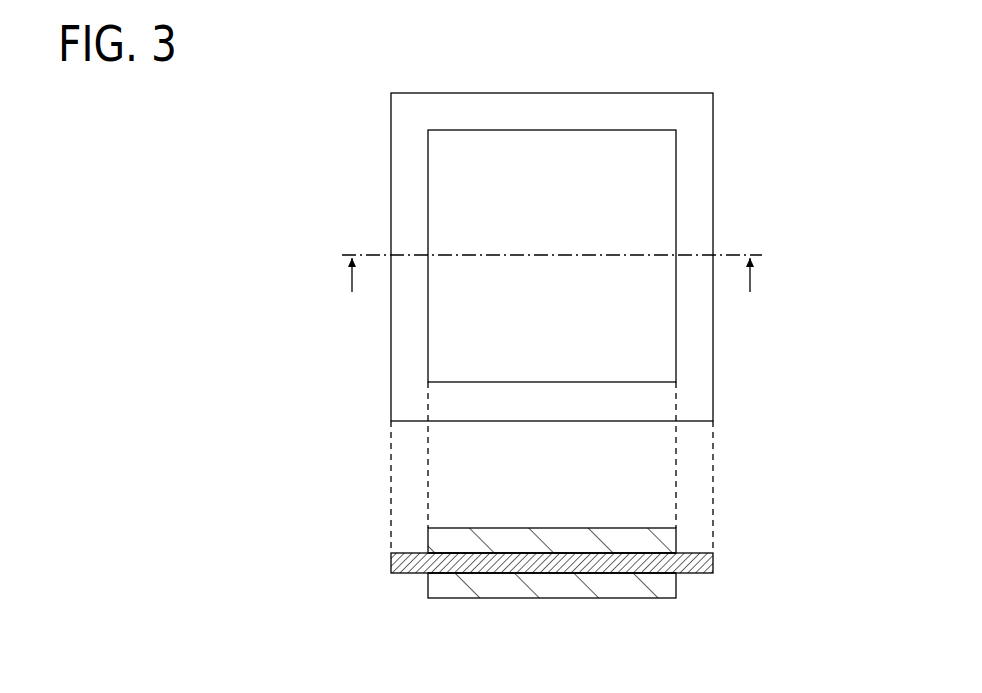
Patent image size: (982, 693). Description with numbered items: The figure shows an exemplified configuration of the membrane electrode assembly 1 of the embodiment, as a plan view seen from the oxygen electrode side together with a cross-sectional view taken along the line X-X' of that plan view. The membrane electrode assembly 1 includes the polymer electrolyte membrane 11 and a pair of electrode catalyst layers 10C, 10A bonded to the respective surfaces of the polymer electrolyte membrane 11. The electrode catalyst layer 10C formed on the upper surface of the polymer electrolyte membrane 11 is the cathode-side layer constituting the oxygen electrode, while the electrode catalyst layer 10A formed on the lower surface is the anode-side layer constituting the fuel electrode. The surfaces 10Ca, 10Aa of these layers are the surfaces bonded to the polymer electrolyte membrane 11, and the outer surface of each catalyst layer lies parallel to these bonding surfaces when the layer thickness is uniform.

The membrane electrode assembly 1 is at (745, 128).
The polymer electrolyte membrane 11 is at (412, 368).
The electrode catalyst layer 10C is at (642, 328).
The electrode catalyst layer 10A is at (665, 583).
The surface 10Ca is at (586, 561).
The surface 10Aa is at (632, 565).